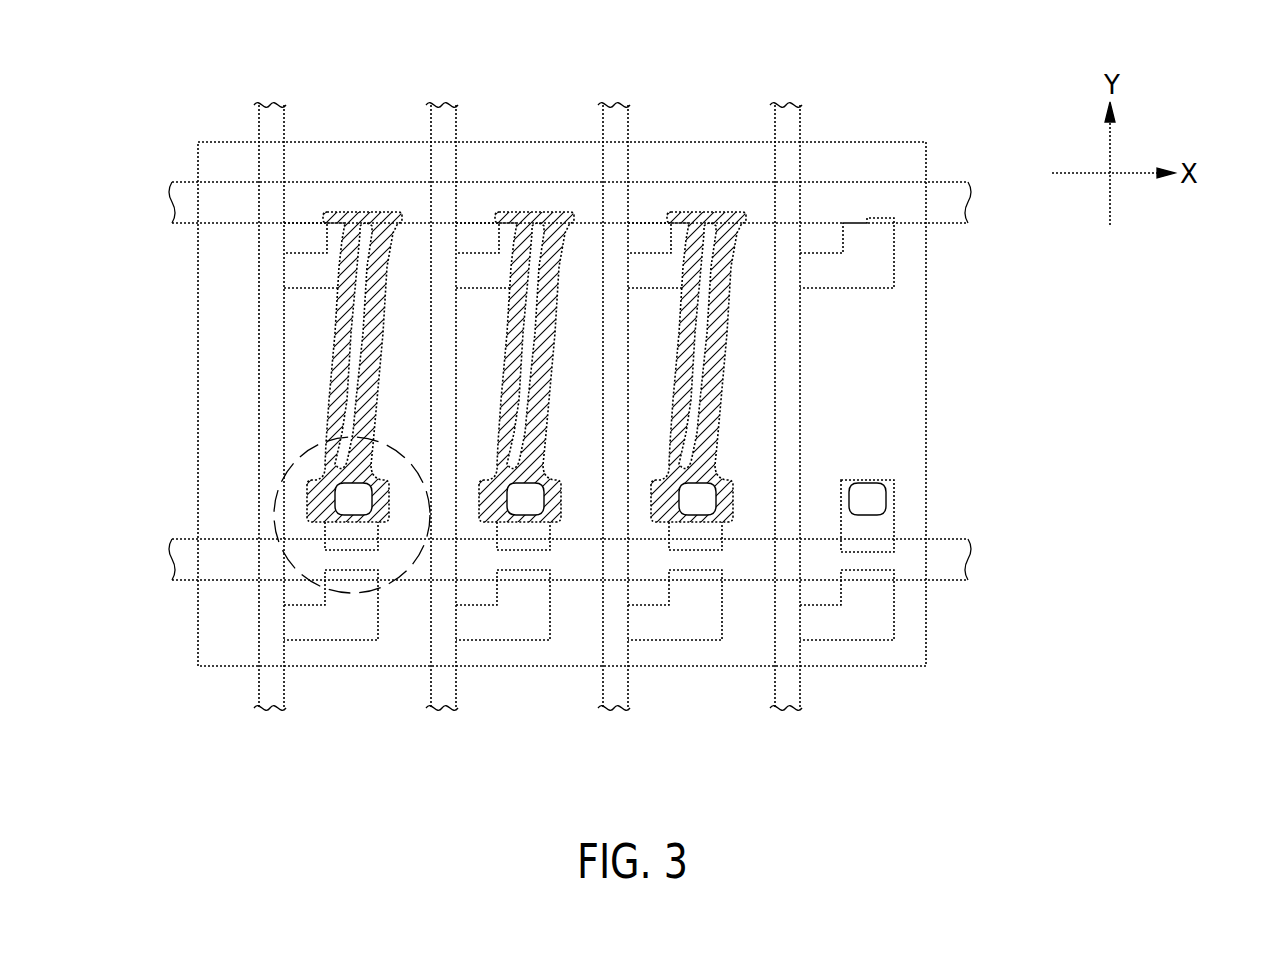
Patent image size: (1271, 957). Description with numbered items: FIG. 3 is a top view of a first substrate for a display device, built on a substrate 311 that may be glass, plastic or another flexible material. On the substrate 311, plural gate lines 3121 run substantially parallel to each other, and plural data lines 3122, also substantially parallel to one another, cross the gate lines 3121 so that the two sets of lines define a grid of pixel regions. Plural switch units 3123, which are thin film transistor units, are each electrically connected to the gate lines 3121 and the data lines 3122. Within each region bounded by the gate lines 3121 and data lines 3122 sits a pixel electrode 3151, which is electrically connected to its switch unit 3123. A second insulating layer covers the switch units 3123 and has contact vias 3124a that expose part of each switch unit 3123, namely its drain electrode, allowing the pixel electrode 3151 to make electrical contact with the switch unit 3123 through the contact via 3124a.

The substrate 311 is at (926, 418).
The gate lines 3121 is at (974, 558).
The data lines 3122 is at (790, 103).
The switch units 3123 is at (342, 594).
The contact vias 3124a is at (345, 502).
The pixel electrodes 3151 is at (333, 372).